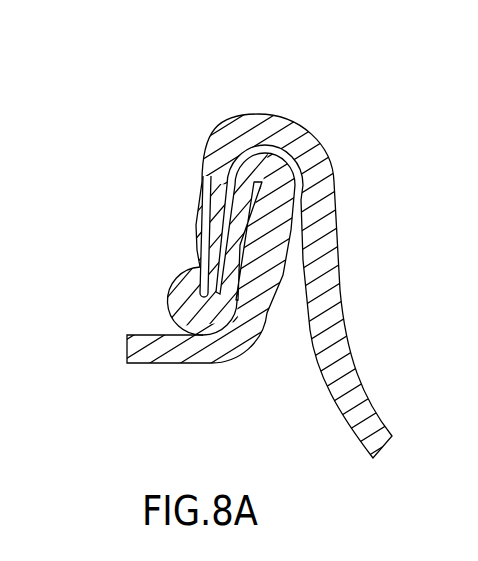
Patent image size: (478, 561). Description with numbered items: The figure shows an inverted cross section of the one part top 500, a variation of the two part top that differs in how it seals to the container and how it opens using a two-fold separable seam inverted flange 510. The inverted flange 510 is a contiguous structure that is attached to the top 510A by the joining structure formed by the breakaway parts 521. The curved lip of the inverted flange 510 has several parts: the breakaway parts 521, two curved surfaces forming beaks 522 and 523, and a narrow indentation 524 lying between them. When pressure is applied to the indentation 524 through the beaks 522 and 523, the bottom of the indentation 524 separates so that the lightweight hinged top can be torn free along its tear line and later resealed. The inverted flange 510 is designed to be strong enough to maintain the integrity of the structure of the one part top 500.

The one part top 500 is at (152, 112).
The two-fold separable seam inverted flange 510 is at (163, 365).
The top 510A is at (320, 370).
The breakaway parts 521 is at (208, 197).
The curved surface beak 522 is at (197, 232).
The curved surface beak 523 is at (182, 268).
The narrow indentation 524 is at (207, 258).